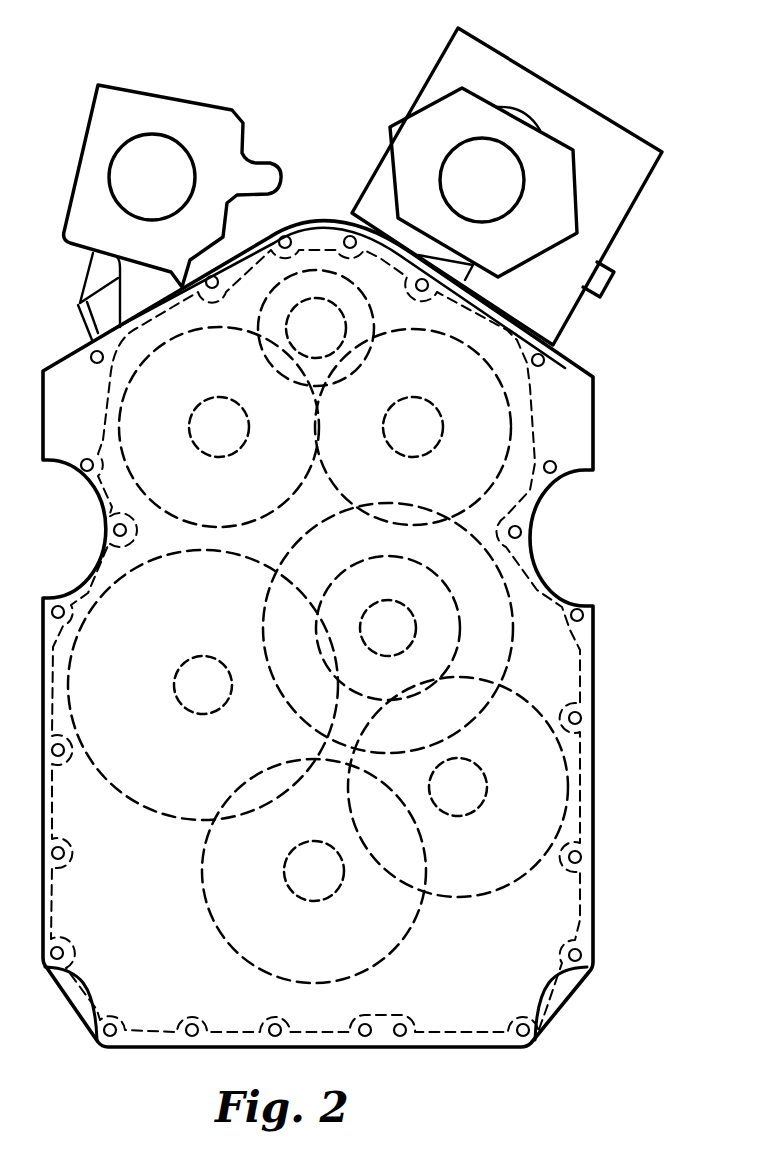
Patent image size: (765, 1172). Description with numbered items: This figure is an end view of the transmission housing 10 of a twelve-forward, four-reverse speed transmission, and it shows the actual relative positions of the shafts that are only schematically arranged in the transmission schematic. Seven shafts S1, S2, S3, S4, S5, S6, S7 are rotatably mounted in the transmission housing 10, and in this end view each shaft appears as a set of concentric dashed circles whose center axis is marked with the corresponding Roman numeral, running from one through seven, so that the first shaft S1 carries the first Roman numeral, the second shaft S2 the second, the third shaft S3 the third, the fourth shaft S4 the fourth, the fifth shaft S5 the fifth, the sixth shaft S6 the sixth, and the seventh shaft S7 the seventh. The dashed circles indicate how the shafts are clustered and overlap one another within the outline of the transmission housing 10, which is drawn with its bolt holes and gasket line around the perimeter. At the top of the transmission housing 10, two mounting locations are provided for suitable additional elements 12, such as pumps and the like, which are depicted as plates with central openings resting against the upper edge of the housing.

The transmission housing 10 is at (593, 790).
The additional elements 12 is at (163, 97).
The shaft S1 is at (286, 299).
The shaft S2 is at (424, 397).
The shaft S3 is at (214, 457).
The shaft S4 is at (388, 628).
The shaft S5 is at (174, 671).
The shaft S6 is at (487, 782).
The shaft S7 is at (308, 901).